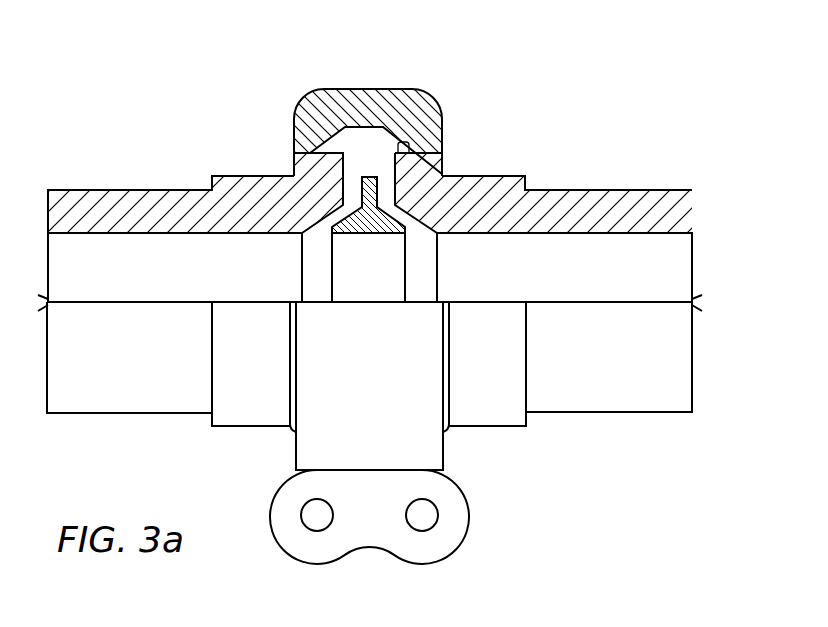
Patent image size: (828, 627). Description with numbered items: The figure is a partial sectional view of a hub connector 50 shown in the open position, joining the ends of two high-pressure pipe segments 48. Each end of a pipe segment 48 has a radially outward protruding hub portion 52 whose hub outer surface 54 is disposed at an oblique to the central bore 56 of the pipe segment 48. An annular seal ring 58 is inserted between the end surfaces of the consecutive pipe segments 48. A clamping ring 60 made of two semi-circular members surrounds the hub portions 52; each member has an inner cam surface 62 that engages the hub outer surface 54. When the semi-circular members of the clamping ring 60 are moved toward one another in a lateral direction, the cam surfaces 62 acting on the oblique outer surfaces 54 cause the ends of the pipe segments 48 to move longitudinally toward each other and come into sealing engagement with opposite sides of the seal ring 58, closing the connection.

The pipe segment 48 is at (150, 191).
The hub connector 50 is at (225, 88).
The hub portion 52 is at (310, 180).
The hub outer surface 54 is at (443, 163).
The central bore 56 is at (561, 234).
The annular seal ring 58 is at (315, 95).
The clamping ring 60 is at (393, 93).
The inner cam surface 62 is at (420, 147).